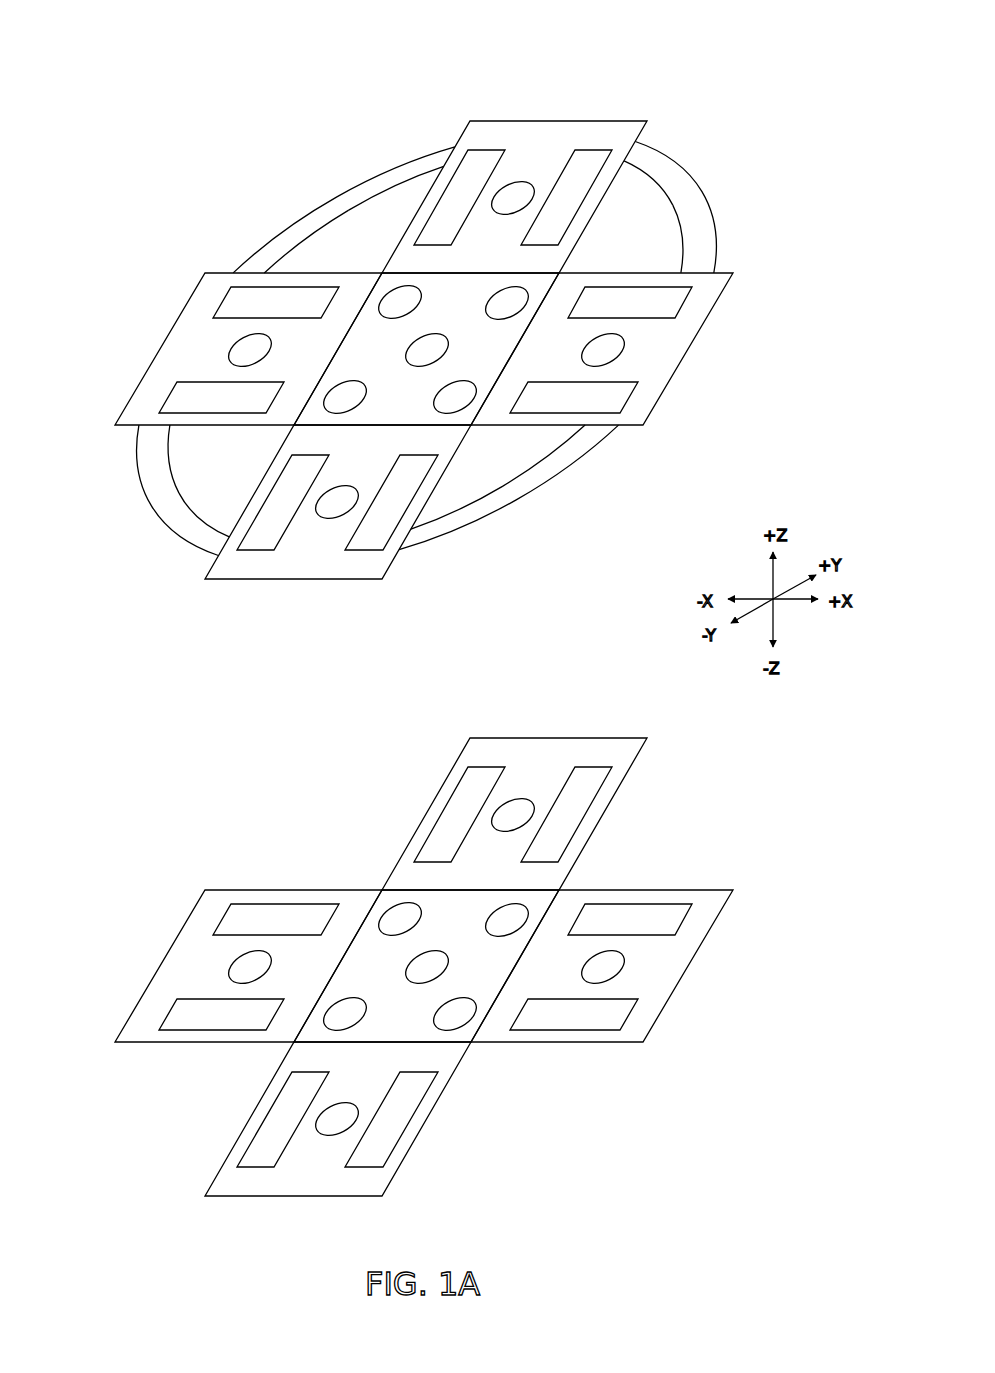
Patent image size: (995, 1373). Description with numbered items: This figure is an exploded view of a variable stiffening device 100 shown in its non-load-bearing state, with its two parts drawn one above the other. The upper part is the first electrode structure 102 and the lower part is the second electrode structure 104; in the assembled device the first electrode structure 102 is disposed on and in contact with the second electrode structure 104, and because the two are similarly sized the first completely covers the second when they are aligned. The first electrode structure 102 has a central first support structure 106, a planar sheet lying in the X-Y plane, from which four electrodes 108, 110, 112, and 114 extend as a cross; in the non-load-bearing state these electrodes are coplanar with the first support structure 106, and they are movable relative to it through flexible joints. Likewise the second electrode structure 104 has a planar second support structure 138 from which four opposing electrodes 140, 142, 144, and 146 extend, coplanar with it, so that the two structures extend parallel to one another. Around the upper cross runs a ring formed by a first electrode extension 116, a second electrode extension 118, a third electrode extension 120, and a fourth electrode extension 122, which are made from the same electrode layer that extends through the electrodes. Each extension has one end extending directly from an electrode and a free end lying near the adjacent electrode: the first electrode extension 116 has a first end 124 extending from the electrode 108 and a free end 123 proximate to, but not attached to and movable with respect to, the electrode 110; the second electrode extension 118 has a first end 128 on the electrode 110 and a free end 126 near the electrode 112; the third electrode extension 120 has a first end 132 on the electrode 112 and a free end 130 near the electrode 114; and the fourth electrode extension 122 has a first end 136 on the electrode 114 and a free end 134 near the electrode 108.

The variable stiffening device 100 is at (100, 103).
The first electrode structure 102 is at (258, 168).
The second electrode structure 104 is at (427, 969).
The first support structure 106 is at (468, 282).
The electrode 108 is at (298, 572).
The electrode 110 is at (683, 348).
The electrode 112 is at (555, 126).
The electrode 114 is at (170, 350).
The first electrode extension 116 is at (537, 483).
The second electrode extension 118 is at (692, 190).
The third electrode extension 120 is at (315, 215).
The fourth electrode extension 122 is at (160, 517).
The free end 123 is at (606, 430).
The first end 124 is at (403, 543).
The free end 126 is at (623, 158).
The first end 128 is at (700, 273).
The free end 130 is at (248, 273).
The first end 132 is at (450, 157).
The free end 134 is at (223, 543).
The first end 136 is at (150, 432).
The second support structure 138 is at (426, 936).
The opposing electrode 140 is at (338, 1141).
The opposing electrode 142 is at (610, 966).
The opposing electrode 144 is at (514, 794).
The opposing electrode 146 is at (243, 966).